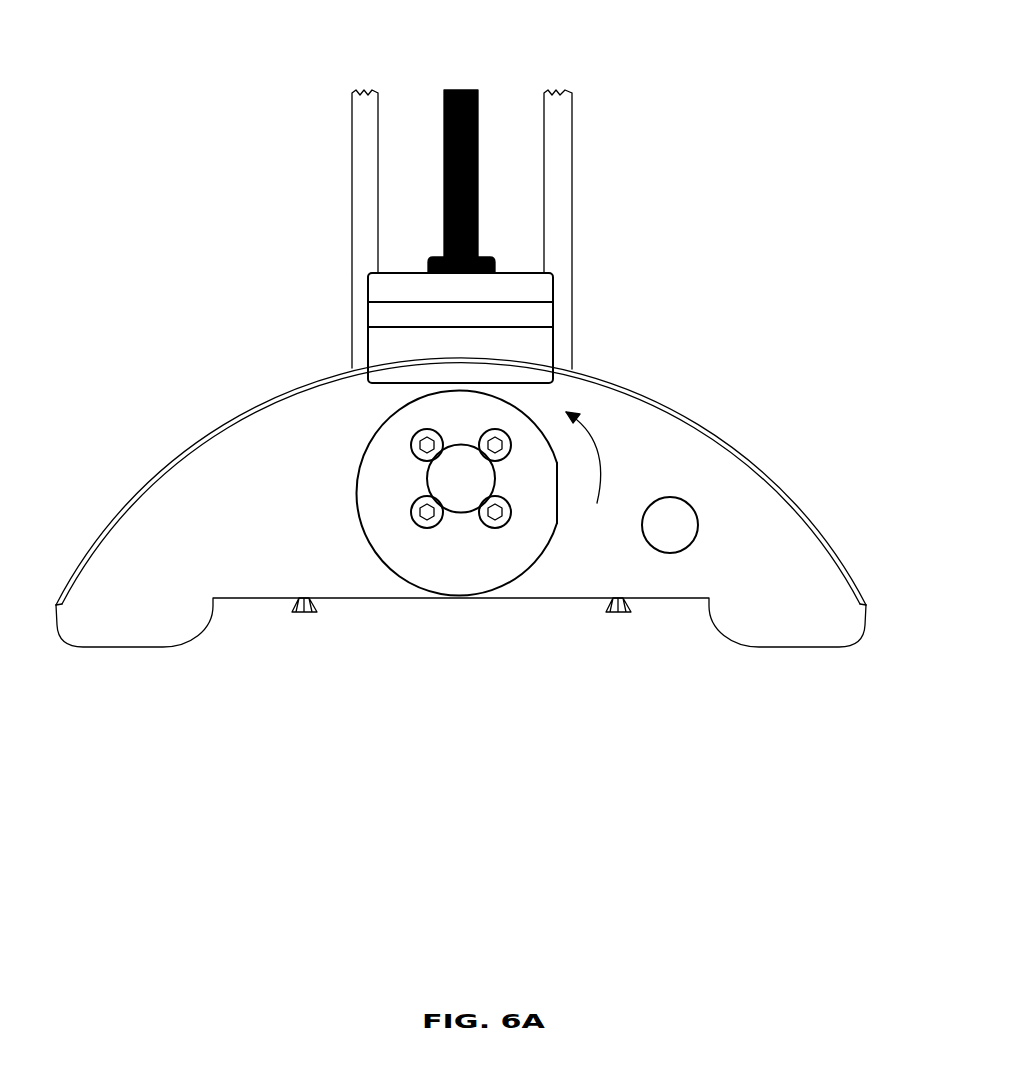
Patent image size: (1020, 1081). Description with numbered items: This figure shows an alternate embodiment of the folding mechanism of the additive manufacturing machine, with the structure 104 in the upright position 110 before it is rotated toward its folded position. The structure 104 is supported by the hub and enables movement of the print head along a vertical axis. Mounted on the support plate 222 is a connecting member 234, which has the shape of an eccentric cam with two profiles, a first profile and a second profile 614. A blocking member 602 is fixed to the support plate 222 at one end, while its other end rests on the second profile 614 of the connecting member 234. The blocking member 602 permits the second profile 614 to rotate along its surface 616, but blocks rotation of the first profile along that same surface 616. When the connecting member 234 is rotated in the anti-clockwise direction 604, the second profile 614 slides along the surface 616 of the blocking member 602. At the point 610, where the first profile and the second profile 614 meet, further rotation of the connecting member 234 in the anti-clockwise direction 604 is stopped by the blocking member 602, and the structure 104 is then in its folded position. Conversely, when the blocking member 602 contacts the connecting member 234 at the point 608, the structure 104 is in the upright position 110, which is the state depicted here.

The structure 104 is at (472, 76).
The upright position 110 is at (603, 116).
The blocking member 602 is at (555, 286).
The point 608 is at (408, 382).
The second profile 614 is at (543, 418).
The anti-clockwise direction 604 is at (597, 452).
The support plate 222 is at (738, 449).
The connecting member 234 is at (440, 546).
The surface 616 is at (386, 385).
The point 610 is at (558, 531).